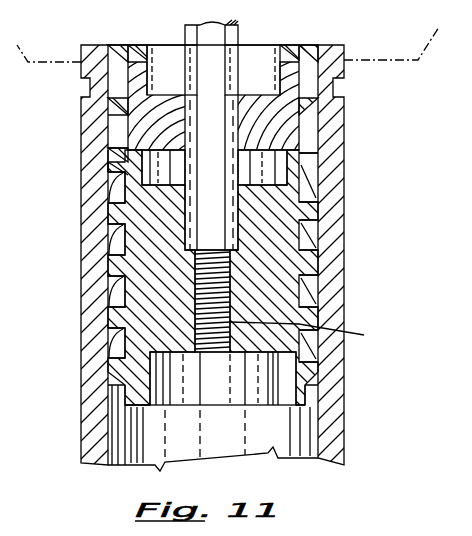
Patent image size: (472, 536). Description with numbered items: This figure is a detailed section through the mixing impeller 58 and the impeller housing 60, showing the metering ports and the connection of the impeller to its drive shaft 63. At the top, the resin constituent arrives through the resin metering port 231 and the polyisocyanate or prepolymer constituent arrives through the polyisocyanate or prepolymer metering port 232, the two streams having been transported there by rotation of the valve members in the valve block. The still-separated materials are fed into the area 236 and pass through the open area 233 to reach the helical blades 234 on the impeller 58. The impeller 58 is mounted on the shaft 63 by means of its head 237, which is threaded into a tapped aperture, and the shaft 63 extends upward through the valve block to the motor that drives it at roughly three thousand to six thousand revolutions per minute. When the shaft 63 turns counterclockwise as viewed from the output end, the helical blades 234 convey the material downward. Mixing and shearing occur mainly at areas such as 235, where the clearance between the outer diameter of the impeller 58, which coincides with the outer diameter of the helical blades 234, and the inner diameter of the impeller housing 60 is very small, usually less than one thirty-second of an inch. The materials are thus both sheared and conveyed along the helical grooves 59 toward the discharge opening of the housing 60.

The mixing impeller 58 is at (296, 242).
The helical grooves 59 is at (110, 241).
The impeller housing 60 is at (320, 408).
The drive shaft 63 is at (231, 210).
The resin metering port 231 is at (171, 50).
The polyisocyanate or prepolymer metering port 232 is at (261, 48).
The open area 233 is at (108, 133).
The helical blades 234 is at (110, 107).
The mixing and shearing areas 235 is at (108, 162).
The feed area 236 is at (152, 127).
The head 237 is at (230, 277).